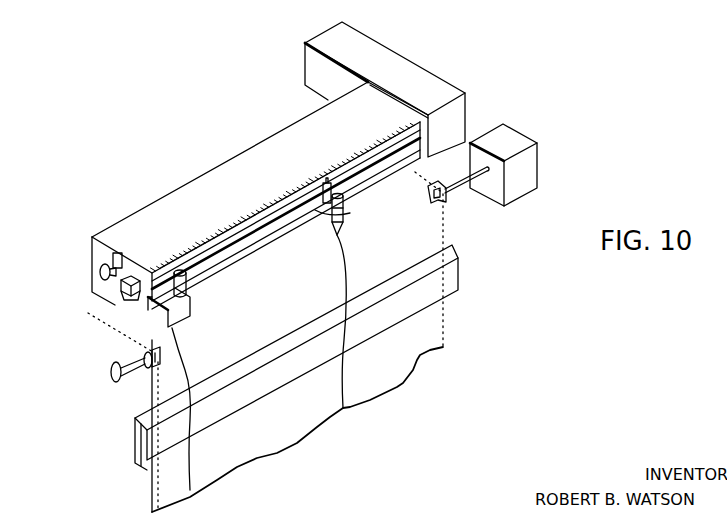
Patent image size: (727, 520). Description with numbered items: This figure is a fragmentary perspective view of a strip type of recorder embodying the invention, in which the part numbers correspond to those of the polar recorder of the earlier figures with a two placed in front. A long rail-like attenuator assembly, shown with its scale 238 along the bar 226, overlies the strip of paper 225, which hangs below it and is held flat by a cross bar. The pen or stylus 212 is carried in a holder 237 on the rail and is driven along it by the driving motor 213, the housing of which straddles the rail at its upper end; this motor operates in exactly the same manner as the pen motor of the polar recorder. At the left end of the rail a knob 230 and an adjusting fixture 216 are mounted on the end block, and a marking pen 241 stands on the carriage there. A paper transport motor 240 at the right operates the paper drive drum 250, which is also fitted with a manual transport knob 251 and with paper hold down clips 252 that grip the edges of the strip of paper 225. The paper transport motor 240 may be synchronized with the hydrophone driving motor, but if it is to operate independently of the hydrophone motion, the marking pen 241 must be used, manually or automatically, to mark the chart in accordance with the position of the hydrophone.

The pen or stylus 212 is at (342, 195).
The driving motor 213 is at (395, 65).
The adjusting fixture 216 is at (118, 296).
The strip of paper 225 is at (368, 385).
The rail 226 is at (255, 162).
The knob 230 is at (100, 274).
The pen holder 237 is at (323, 183).
The scale 238 is at (242, 227).
The paper transport motor 240 is at (518, 137).
The marking pen 241 is at (183, 268).
The paper drive drum 250 is at (142, 356).
The manual transport knob 251 is at (111, 378).
The paper hold down clips 252 is at (148, 368).